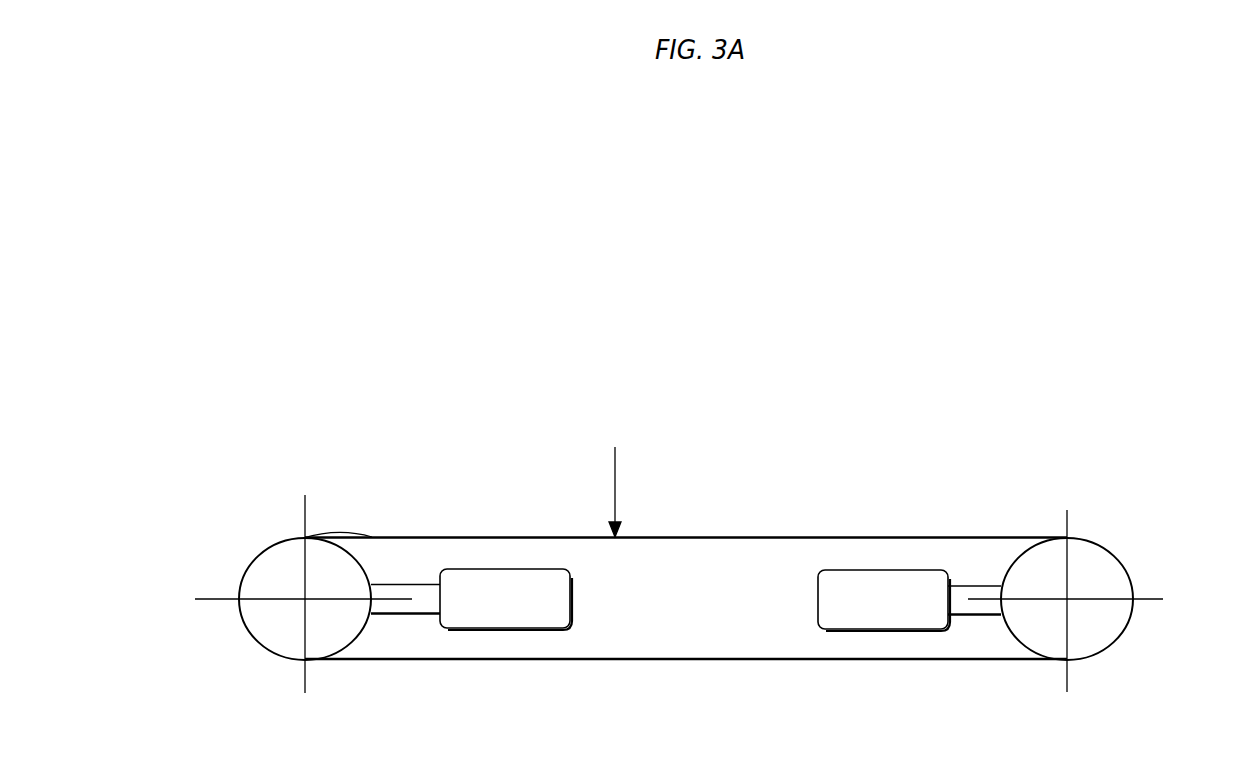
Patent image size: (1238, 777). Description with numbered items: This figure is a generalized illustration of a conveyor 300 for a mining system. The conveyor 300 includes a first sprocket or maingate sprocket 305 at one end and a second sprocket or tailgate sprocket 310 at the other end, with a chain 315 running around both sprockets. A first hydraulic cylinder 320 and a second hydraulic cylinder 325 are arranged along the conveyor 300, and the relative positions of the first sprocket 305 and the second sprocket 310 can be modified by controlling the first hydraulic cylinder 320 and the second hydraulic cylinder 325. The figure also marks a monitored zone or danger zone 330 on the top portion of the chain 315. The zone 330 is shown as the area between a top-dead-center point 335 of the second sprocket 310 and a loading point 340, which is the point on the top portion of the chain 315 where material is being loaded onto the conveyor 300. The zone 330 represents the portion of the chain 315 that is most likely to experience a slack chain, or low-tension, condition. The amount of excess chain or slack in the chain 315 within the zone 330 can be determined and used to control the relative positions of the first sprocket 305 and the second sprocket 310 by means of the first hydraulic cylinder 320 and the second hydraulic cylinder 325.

The conveyor 300 is at (365, 285).
The first sprocket or maingate sprocket 305 is at (1117, 560).
The second sprocket or tailgate sprocket 310 is at (262, 550).
The chain 315 is at (820, 537).
The first hydraulic cylinder 320 is at (818, 597).
The second hydraulic cylinder 325 is at (570, 603).
The monitored zone or danger zone 330 is at (617, 425).
The top-dead-center point 335 is at (305, 537).
The loading point 340 is at (615, 490).